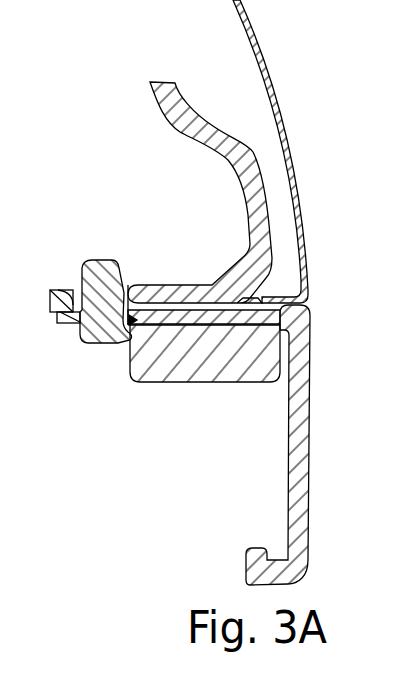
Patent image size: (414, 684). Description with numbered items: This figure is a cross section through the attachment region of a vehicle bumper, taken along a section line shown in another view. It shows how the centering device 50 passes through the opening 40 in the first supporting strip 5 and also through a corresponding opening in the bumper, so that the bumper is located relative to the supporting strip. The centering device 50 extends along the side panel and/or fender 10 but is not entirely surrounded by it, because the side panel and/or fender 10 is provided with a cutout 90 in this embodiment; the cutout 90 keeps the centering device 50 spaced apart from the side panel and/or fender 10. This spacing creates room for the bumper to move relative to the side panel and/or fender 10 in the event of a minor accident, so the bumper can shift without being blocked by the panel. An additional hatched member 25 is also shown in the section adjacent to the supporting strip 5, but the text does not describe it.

The side panel and/or fender 10 is at (250, 33).
The first supporting strip 5 is at (250, 188).
The opening 40 is at (128, 285).
The centering device 50 is at (88, 343).
The cutout 90 is at (130, 347).
The trim carrier 25 is at (298, 432).